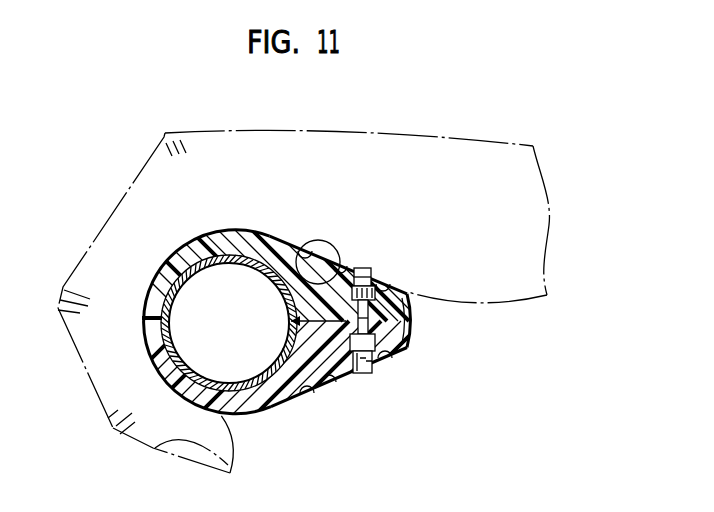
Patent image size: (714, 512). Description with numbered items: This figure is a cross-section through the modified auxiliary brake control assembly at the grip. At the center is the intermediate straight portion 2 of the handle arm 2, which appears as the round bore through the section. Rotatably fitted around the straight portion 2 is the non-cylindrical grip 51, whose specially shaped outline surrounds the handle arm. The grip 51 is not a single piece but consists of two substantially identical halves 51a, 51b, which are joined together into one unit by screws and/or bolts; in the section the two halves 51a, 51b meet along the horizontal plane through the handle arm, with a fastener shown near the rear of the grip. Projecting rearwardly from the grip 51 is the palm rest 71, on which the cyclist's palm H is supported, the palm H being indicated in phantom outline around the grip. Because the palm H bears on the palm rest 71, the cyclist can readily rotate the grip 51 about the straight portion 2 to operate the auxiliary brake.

The intermediate straight portion of the handle arm 2 is at (182, 244).
The non-cylindrical grip 51 is at (233, 228).
The grip half 51a is at (262, 243).
The grip half 51b is at (265, 412).
The cyclist's palm H is at (297, 250).
The palm rest 71 is at (372, 265).